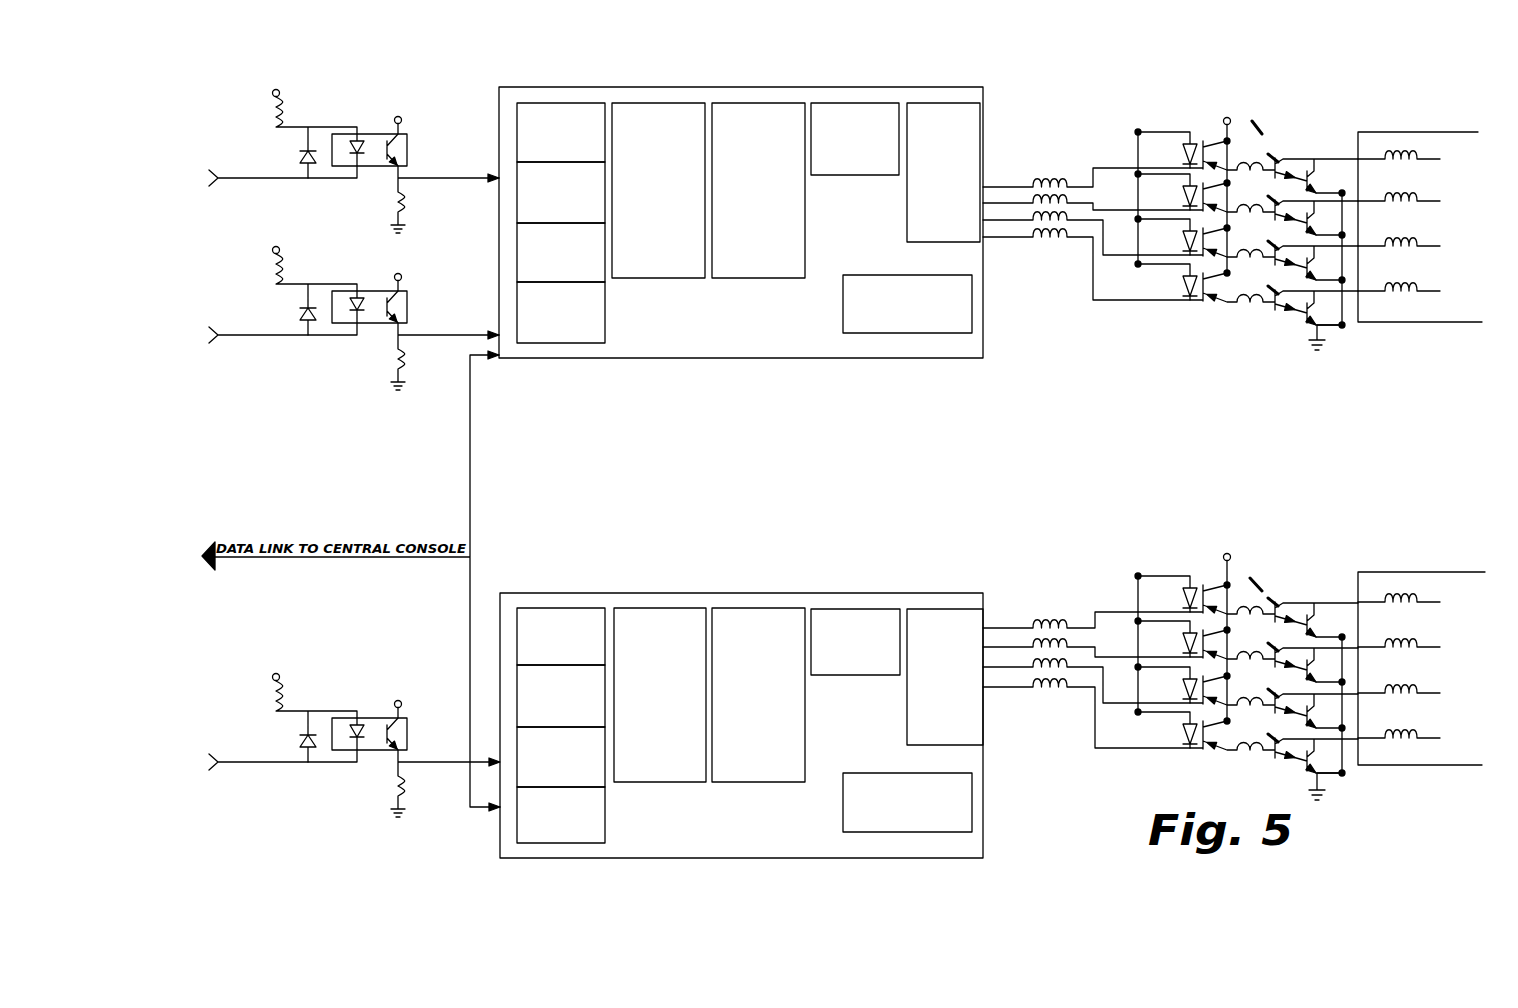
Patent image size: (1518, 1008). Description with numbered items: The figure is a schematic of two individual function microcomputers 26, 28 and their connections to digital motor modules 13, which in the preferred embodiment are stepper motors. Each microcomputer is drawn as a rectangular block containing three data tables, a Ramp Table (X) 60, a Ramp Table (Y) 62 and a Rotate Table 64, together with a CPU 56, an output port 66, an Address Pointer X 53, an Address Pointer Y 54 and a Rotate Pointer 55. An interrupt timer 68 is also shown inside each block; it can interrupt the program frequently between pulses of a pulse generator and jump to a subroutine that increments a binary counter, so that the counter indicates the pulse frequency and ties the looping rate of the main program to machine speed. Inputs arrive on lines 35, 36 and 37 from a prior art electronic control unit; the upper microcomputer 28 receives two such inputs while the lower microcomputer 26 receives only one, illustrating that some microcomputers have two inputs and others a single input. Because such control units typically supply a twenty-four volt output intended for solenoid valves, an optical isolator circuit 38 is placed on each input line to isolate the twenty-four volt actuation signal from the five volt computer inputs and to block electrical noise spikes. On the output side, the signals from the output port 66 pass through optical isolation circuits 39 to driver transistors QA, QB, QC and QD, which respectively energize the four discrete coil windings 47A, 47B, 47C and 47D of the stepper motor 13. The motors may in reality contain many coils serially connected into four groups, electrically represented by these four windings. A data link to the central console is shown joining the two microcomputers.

The digital motor module 13 is at (1434, 336).
The individual function microcomputer 26 is at (753, 586).
The individual function microcomputer 28 is at (783, 369).
The input line 35 is at (247, 163).
The input line 36 is at (251, 323).
The input line 37 is at (270, 750).
The optical isolator circuit 38 is at (372, 176).
The optical isolation circuit 39 is at (1173, 314).
The coil winding 47A is at (1394, 142).
The coil winding 47B is at (1410, 180).
The coil winding 47C is at (1407, 223).
The coil winding 47D is at (1407, 272).
The Address Pointer X 53 is at (506, 113).
The Address Pointer Y 54 is at (506, 199).
The Rotate Pointer 55 is at (506, 263).
The CPU 56 is at (568, 357).
The Ramp Table (X) 60 is at (677, 289).
The Ramp Table (Y) 62 is at (778, 289).
The Rotate Table 64 is at (879, 185).
The output port 66 is at (985, 133).
The interrupt timer 68 is at (982, 308).